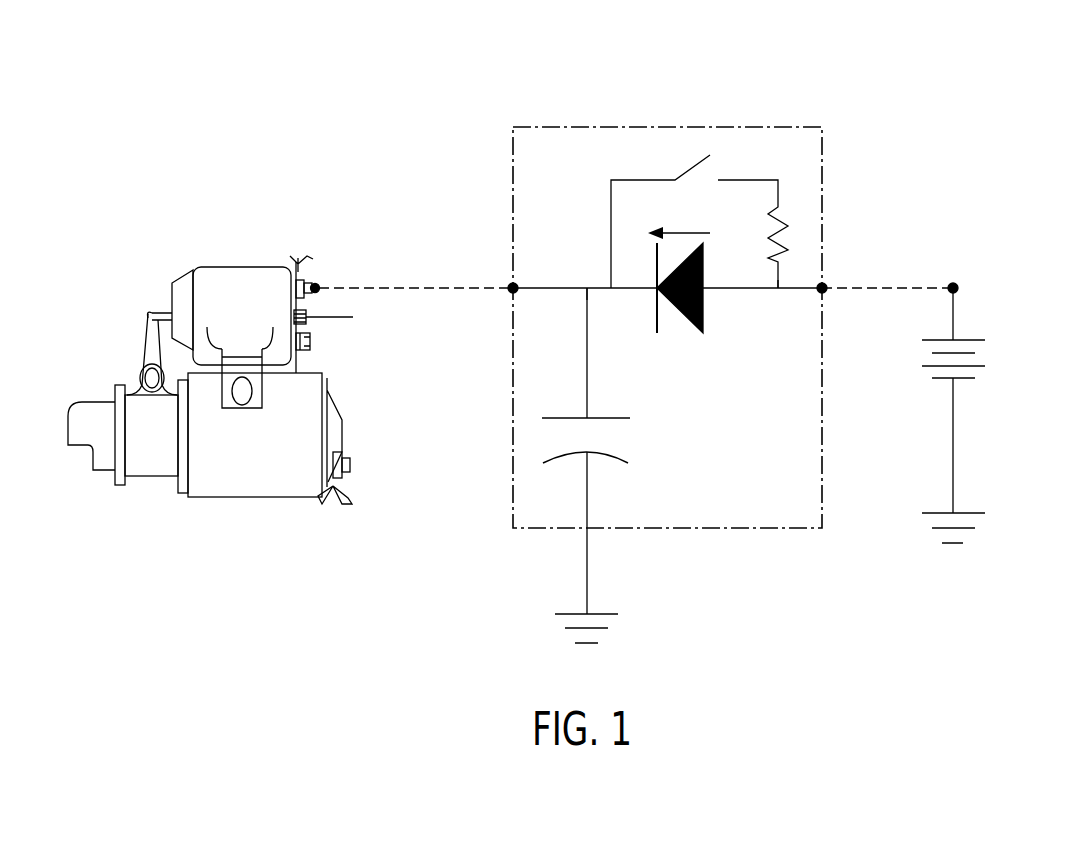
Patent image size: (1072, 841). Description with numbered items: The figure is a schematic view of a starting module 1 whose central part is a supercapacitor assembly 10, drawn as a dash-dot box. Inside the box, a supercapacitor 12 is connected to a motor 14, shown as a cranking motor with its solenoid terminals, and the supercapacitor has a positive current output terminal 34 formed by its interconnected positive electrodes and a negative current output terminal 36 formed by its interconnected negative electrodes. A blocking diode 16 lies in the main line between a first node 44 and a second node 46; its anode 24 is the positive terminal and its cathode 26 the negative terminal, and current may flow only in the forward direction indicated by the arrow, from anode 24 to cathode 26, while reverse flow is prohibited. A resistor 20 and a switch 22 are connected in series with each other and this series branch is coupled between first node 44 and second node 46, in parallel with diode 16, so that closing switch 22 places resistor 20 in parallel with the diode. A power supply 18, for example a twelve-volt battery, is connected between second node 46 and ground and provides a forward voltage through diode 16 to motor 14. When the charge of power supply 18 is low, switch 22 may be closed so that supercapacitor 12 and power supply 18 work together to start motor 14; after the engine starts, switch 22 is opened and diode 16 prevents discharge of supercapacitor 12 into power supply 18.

The starting module 1 is at (391, 93).
The supercapacitor assembly 10 is at (610, 125).
The supercapacitor 12 is at (625, 462).
The motor 14 is at (172, 297).
The blocking diode 16 is at (703, 333).
The power supply 18 is at (968, 340).
The resistor 20 is at (787, 208).
The switch 22 is at (710, 155).
The anode 24 is at (737, 288).
The cathode 26 is at (655, 290).
The positive current output terminal 34 is at (554, 418).
The negative current output terminal 36 is at (543, 463).
The first node 44 is at (580, 283).
The second node 46 is at (794, 283).